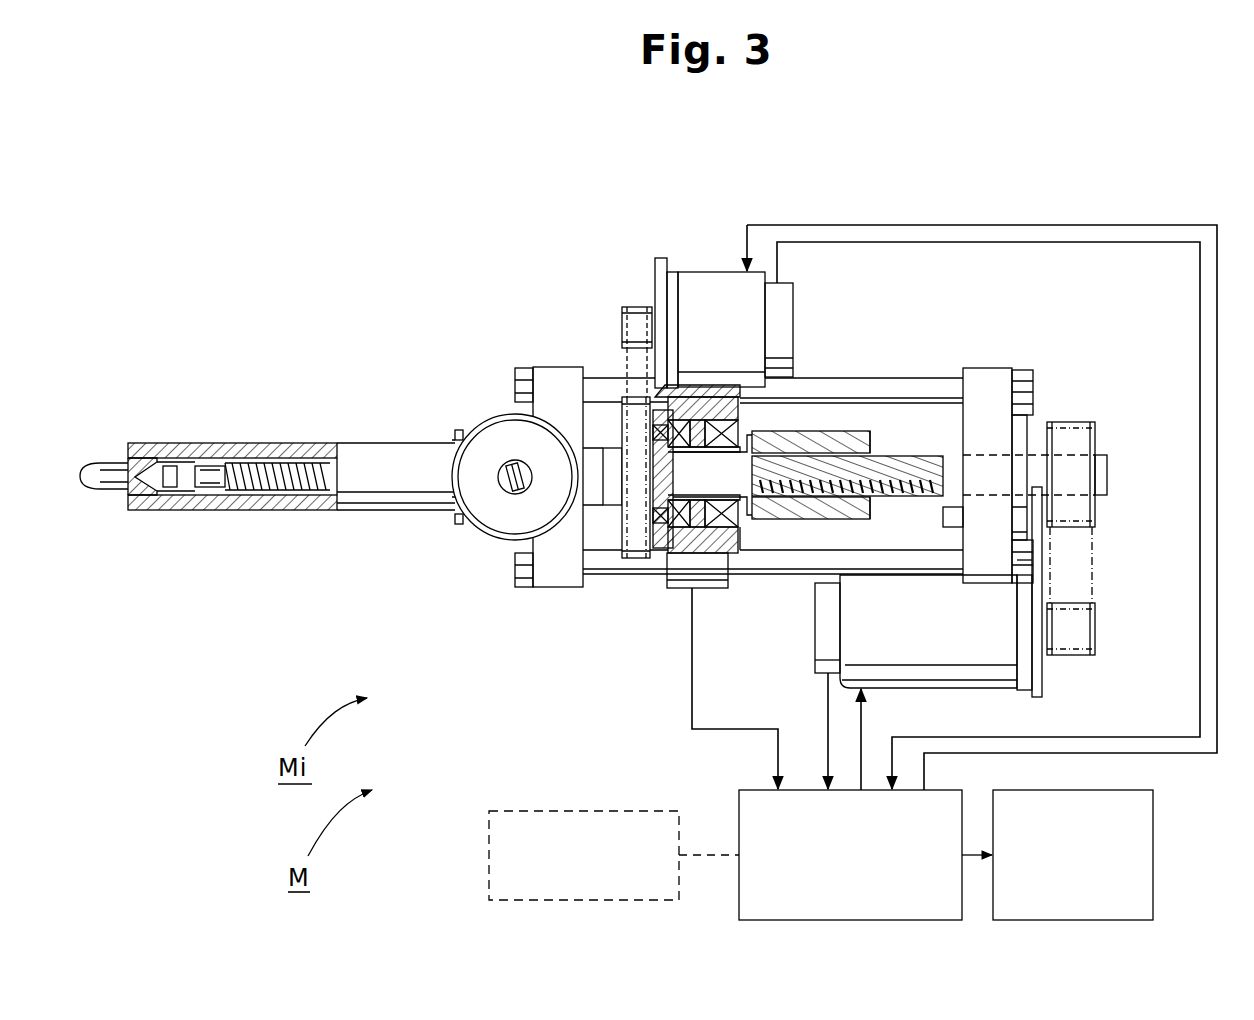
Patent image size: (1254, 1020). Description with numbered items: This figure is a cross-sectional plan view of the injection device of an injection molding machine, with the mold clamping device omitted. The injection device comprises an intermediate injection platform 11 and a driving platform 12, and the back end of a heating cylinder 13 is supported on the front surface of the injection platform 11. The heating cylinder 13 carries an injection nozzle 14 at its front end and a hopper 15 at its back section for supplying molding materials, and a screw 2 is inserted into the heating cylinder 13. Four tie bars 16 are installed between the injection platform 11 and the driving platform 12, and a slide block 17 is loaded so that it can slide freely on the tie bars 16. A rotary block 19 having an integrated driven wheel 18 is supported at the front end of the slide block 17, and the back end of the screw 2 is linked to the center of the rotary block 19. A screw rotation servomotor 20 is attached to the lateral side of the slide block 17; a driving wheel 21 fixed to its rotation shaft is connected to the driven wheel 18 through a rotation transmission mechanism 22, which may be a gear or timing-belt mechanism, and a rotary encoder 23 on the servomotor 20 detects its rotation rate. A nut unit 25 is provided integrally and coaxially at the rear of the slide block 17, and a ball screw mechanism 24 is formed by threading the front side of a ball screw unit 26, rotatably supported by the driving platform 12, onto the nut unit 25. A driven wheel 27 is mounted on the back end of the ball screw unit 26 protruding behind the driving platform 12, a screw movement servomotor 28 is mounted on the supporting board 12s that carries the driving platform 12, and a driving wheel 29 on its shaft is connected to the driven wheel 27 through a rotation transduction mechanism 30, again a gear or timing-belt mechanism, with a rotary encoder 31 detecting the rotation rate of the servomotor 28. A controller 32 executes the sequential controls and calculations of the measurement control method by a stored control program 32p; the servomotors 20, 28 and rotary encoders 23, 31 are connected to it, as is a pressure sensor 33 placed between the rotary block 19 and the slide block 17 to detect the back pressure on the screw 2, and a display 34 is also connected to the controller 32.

The screw 2 is at (272, 443).
The injection platform 11 is at (540, 367).
The driving platform 12 is at (1015, 393).
The supporting board 12s is at (1043, 684).
The heating cylinder 13 is at (269, 512).
The injection nozzle 14 is at (100, 460).
The hopper 15 is at (492, 416).
The tie bars 16 is at (948, 378).
The slide block 17 is at (748, 532).
The driven wheel 18 is at (650, 520).
The rotary block 19 is at (745, 437).
The screw rotation servomotor 20 is at (700, 272).
The driving wheel 21 is at (623, 318).
The rotation transmission mechanism 22 is at (612, 357).
The rotary encoder 23 is at (795, 292).
The ball screw mechanism 24 is at (840, 424).
The nut unit 25 is at (856, 431).
The ball screw unit 26 is at (915, 453).
The driven wheel 27 is at (1097, 442).
The screw movement servomotor 28 is at (902, 688).
The driving wheel 29 is at (1097, 636).
The rotation transduction mechanism 30 is at (1098, 557).
The rotary encoder 31 is at (813, 660).
The controller 32 is at (739, 807).
The control program 32p is at (593, 811).
The pressure sensor 33 is at (717, 540).
The display 34 is at (1153, 850).